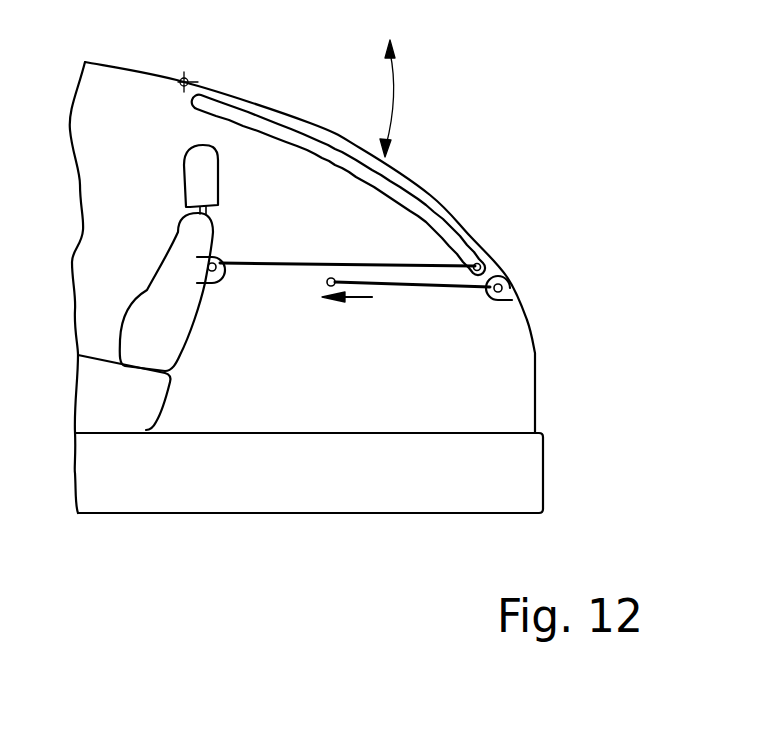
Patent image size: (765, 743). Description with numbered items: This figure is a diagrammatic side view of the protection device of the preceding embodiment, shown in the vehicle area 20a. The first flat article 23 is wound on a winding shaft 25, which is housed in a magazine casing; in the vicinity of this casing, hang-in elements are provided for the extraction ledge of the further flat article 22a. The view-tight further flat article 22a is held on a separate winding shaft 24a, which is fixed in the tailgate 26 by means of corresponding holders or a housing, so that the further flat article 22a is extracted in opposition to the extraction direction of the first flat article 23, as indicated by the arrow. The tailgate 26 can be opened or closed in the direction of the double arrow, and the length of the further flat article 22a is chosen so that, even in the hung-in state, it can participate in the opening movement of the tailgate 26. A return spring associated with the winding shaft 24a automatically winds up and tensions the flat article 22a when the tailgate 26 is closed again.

The vehicle door 20a is at (283, 377).
The further flat article 22a is at (425, 286).
The first flat article 23 is at (361, 262).
The winding shaft 24a is at (512, 286).
The winding shaft 25 is at (217, 261).
The tailgate 26 is at (420, 190).